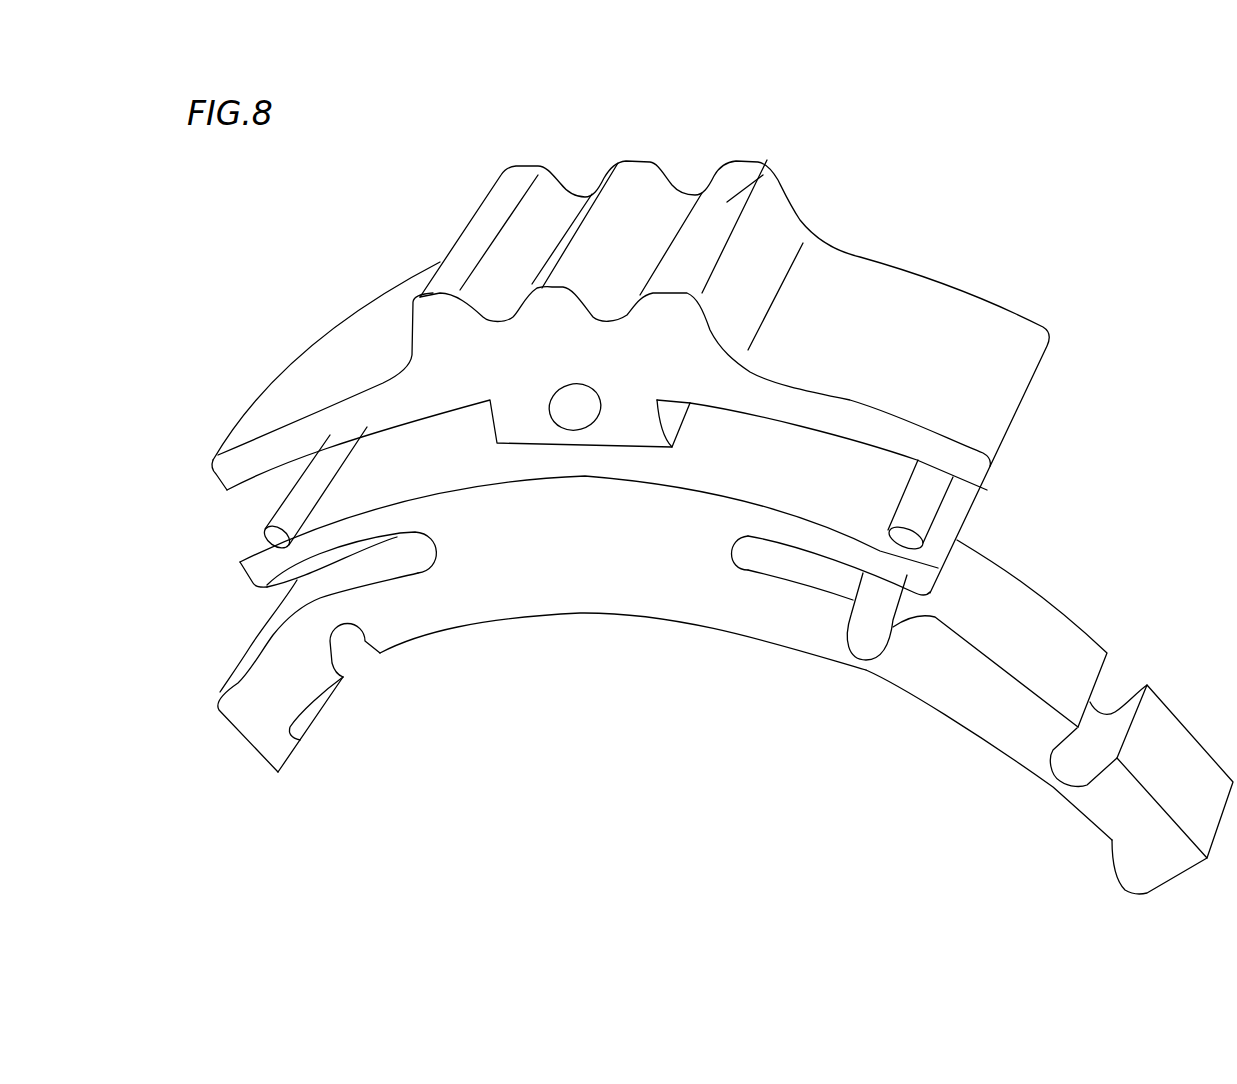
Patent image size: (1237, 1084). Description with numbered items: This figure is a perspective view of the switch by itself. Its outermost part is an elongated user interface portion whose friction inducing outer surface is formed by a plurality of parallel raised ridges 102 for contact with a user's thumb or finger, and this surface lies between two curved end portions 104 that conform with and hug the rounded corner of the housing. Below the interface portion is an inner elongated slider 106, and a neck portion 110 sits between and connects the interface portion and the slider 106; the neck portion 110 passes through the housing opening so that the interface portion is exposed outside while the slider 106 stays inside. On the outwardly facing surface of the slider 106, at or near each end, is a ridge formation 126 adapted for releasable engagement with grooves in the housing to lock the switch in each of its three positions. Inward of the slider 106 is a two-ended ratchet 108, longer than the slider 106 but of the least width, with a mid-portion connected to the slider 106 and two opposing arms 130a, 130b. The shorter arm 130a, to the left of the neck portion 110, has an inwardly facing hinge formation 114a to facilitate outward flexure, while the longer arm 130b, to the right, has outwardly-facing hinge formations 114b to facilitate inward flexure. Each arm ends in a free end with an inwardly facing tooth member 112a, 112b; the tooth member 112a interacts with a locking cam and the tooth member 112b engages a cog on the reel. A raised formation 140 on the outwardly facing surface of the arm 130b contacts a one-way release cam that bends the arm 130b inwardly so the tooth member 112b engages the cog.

The raised ridges 102 is at (500, 210).
The curved end portions 104 is at (353, 333).
The slider 106 is at (817, 533).
The ratchet 108 is at (605, 603).
The neck portion 110 is at (640, 420).
The tooth member 112a is at (290, 757).
The tooth member 112b is at (1123, 890).
The hinge formation 114a is at (347, 640).
The hinge formations 114b is at (865, 637).
The ridge formation 126 is at (283, 518).
The shorter arm 130a is at (263, 645).
The longer arm 130b is at (983, 743).
The raised formation 140 is at (963, 587).